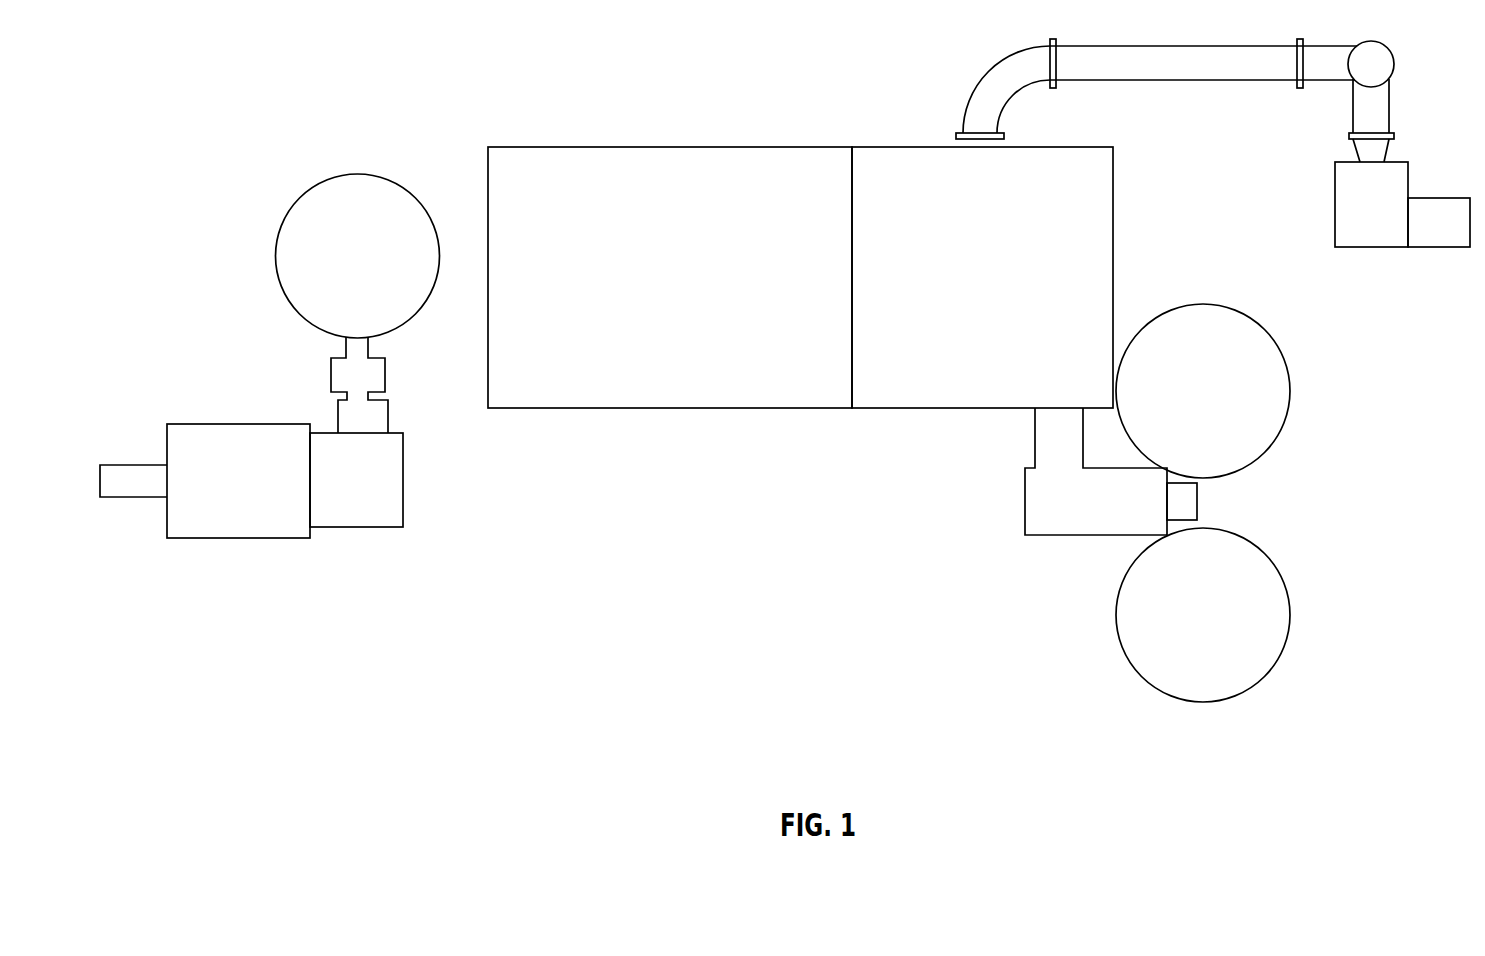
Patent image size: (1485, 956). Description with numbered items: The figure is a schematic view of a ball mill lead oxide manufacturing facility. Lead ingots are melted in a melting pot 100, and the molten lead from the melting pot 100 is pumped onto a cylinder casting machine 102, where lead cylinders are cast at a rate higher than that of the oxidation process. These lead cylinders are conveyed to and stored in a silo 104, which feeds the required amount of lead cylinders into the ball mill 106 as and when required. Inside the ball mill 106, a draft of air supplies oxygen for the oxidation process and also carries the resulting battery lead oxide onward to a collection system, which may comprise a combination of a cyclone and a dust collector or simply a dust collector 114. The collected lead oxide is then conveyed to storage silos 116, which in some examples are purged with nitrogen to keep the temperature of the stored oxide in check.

The melting pot 100 is at (233, 425).
The cylinder casting machine 102 is at (403, 492).
The silo 104 is at (307, 195).
The ball mill 106 is at (603, 145).
The dust collector 114 is at (1113, 242).
The storage silos 116 is at (1292, 395).